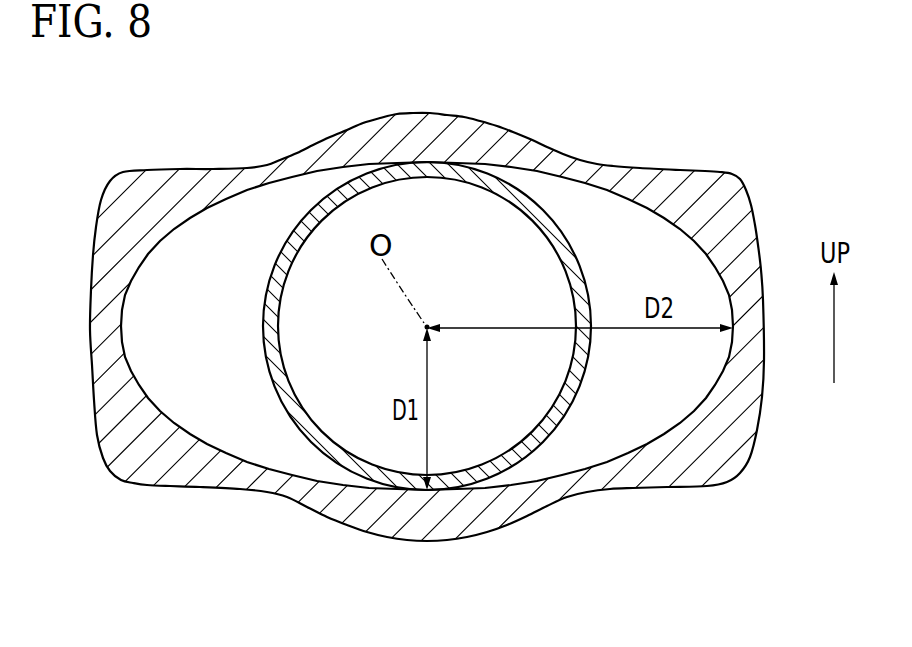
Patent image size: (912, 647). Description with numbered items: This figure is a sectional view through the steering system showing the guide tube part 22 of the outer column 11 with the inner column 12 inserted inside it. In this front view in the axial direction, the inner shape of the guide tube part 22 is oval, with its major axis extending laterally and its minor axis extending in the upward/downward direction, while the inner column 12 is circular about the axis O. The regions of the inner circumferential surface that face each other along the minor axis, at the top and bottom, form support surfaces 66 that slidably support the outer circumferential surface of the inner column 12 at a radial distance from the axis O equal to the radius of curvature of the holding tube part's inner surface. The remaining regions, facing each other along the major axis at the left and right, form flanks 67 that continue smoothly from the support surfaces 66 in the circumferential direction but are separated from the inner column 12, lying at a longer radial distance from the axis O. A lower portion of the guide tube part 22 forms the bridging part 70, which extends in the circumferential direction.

The outer column 11 is at (768, 239).
The inner column 12 is at (545, 230).
The guide tube part 22 is at (740, 422).
The support surface 66 is at (427, 163).
The flank 67 is at (121, 327).
The bridging part 70 is at (332, 506).